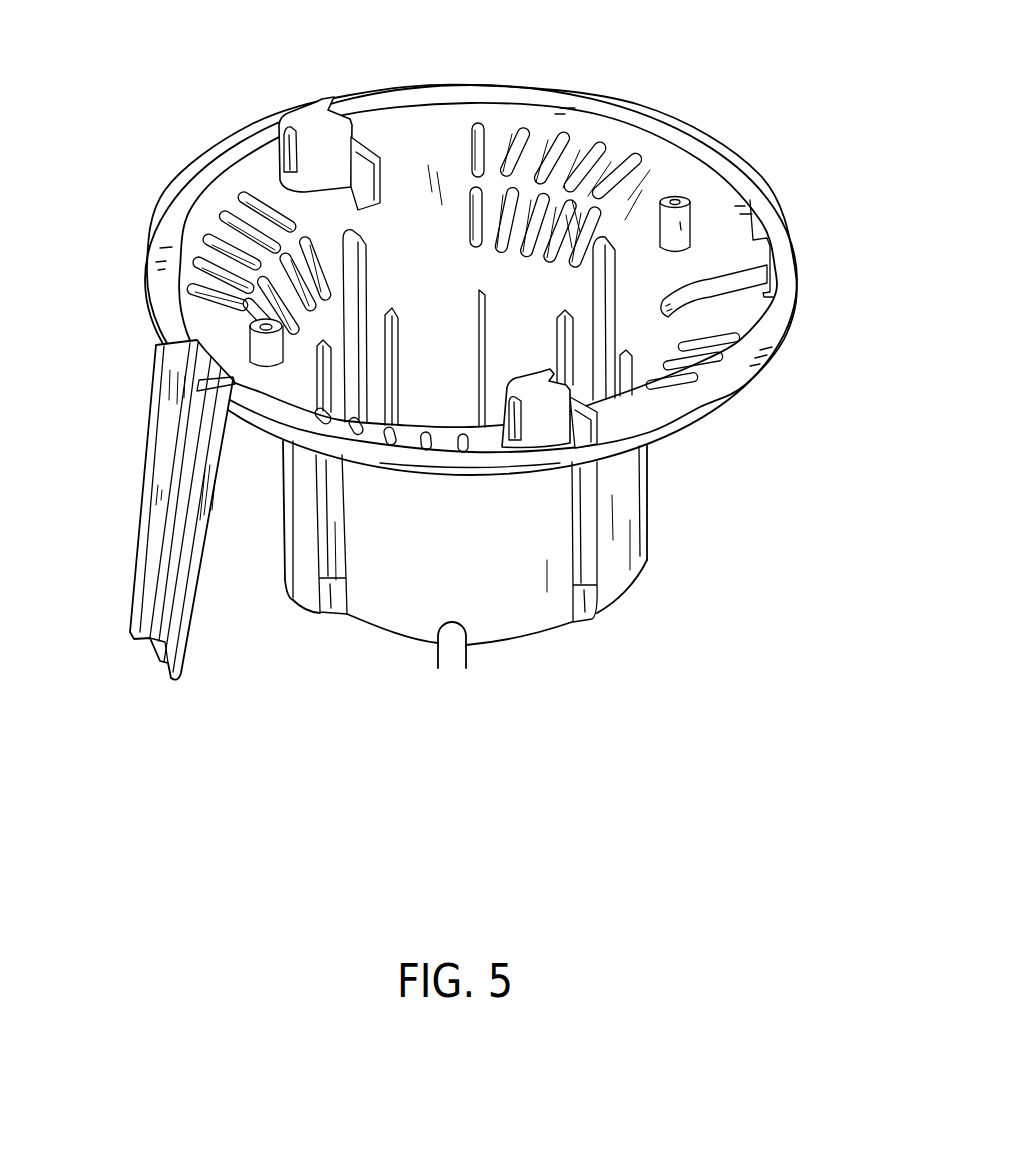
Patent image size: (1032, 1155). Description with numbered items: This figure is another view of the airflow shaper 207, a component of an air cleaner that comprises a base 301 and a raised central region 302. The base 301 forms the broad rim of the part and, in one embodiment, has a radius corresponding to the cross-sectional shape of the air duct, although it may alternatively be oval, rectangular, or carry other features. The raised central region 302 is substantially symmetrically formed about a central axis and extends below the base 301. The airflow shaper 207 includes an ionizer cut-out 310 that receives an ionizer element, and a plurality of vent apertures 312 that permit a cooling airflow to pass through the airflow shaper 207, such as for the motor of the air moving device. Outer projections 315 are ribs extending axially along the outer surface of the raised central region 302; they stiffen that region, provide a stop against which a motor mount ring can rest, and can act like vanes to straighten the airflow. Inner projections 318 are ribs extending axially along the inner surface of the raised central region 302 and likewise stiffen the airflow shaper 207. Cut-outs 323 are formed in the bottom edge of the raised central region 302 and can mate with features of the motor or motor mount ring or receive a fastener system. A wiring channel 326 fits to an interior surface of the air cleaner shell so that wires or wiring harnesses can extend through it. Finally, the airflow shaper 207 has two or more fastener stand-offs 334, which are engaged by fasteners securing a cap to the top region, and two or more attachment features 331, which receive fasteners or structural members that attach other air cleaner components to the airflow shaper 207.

The airflow shaper 207 is at (240, 812).
The base 301 is at (680, 130).
The raised central region 302 is at (793, 403).
The ionizer cut-out 310 is at (766, 280).
The vent apertures 312 is at (523, 132).
The outer projections 315 is at (320, 548).
The inner projections 318 is at (395, 312).
The cut-outs 323 is at (452, 669).
The wiring channel 326 is at (132, 572).
The attachment features 331 is at (300, 104).
The fastener stand-offs 334 is at (252, 330).